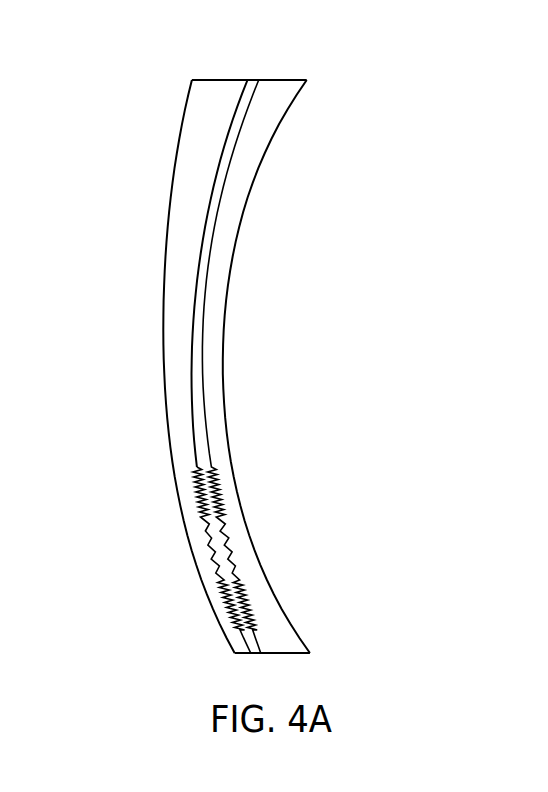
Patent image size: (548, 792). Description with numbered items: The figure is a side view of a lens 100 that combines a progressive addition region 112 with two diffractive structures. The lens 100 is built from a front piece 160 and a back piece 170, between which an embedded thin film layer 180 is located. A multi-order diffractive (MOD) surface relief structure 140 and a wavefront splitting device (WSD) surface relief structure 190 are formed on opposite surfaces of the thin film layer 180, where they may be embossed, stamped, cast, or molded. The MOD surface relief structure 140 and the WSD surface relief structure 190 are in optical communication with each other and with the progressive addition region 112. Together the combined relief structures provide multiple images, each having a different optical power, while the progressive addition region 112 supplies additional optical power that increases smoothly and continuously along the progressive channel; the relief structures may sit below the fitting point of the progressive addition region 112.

The lens 100 is at (116, 56).
The progressive addition region 112 is at (198, 578).
The MOD surface relief structure 140 is at (198, 482).
The front piece 160 is at (217, 92).
The back piece 170 is at (275, 92).
The thin film layer 180 is at (198, 385).
The WSD surface relief structure 190 is at (220, 493).